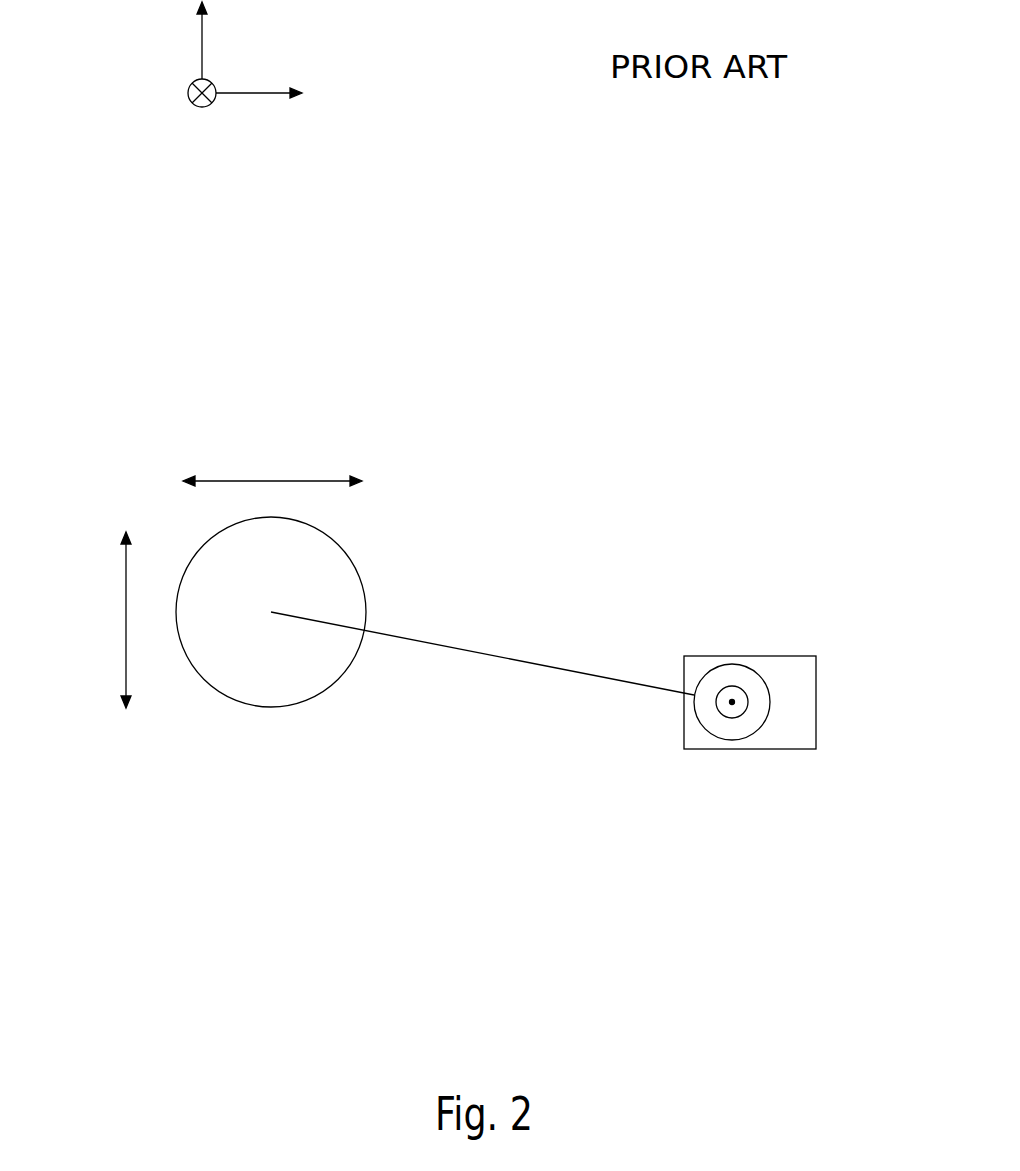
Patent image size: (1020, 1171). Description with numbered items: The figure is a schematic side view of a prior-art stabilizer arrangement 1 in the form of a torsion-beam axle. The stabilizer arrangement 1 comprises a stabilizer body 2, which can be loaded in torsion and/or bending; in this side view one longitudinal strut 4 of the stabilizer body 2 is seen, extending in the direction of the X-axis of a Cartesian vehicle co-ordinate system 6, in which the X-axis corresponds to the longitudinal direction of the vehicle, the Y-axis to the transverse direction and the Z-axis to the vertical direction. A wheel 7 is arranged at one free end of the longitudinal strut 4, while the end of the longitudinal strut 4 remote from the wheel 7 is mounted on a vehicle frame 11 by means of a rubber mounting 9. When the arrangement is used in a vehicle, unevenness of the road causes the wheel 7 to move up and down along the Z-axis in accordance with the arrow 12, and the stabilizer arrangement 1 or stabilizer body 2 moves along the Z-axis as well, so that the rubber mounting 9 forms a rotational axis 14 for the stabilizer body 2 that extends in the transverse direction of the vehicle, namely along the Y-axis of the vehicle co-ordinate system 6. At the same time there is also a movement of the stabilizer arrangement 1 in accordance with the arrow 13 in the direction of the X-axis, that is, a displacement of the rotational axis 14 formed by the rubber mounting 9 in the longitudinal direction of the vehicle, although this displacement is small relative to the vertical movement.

The stabilizer arrangement 1 is at (619, 532).
The stabilizer body 2 is at (570, 705).
The longitudinal strut 4 is at (455, 648).
The vehicle co-ordinate system 6 is at (148, 114).
The wheel 7 is at (258, 689).
The rubber mounting 9 is at (732, 678).
The vehicle frame 11 is at (817, 702).
The arrow 12 is at (126, 618).
The arrow 13 is at (268, 481).
The rotational axis 14 is at (731, 706).